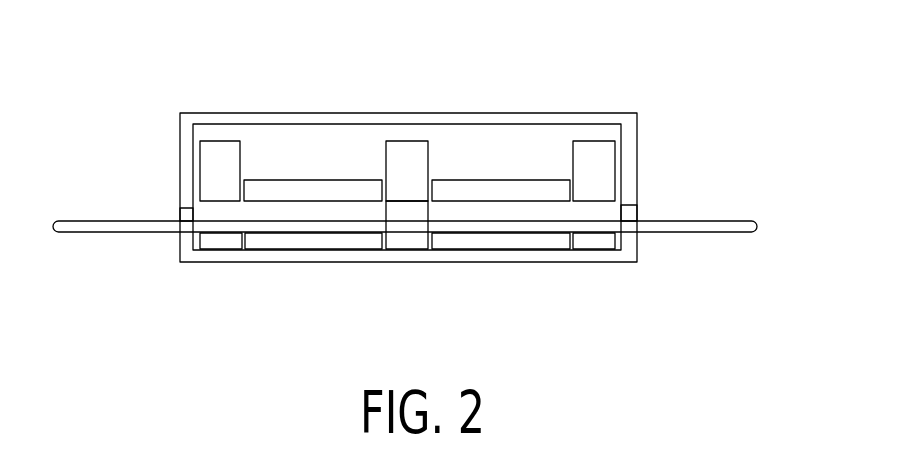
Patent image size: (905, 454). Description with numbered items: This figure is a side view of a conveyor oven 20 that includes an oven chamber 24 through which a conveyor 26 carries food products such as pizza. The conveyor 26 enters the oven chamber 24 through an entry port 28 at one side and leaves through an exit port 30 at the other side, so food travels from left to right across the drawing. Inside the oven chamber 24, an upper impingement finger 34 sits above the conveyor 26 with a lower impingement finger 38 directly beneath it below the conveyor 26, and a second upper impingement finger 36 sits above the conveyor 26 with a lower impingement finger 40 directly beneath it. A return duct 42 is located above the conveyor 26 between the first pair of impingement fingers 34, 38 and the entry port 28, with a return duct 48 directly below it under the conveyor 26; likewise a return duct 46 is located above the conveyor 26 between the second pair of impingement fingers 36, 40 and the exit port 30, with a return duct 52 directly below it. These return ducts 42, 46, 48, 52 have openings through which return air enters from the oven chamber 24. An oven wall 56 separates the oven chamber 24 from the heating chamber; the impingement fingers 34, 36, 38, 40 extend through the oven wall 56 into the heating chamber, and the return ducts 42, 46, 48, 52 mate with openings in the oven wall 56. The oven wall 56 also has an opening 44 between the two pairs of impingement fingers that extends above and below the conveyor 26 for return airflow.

The conveyor oven 20 is at (686, 68).
The oven chamber 24 is at (549, 130).
The conveyor 26 is at (719, 233).
The entry port 28 is at (170, 211).
The exit port 30 is at (645, 207).
The upper impingement finger 34 is at (307, 188).
The upper impingement finger 36 is at (492, 187).
The lower impingement finger 38 is at (312, 242).
The lower impingement finger 40 is at (497, 238).
The return duct 42 is at (212, 152).
The opening 44 is at (404, 150).
The return duct 46 is at (605, 148).
The return duct 48 is at (205, 245).
The return duct 52 is at (597, 242).
The oven wall 56 is at (535, 158).